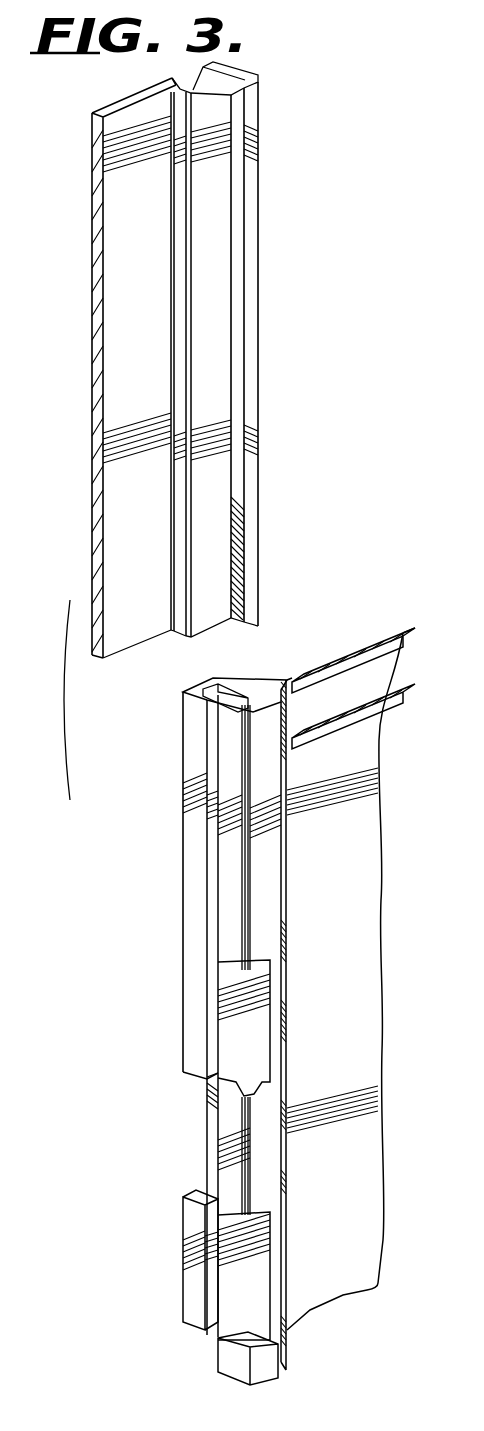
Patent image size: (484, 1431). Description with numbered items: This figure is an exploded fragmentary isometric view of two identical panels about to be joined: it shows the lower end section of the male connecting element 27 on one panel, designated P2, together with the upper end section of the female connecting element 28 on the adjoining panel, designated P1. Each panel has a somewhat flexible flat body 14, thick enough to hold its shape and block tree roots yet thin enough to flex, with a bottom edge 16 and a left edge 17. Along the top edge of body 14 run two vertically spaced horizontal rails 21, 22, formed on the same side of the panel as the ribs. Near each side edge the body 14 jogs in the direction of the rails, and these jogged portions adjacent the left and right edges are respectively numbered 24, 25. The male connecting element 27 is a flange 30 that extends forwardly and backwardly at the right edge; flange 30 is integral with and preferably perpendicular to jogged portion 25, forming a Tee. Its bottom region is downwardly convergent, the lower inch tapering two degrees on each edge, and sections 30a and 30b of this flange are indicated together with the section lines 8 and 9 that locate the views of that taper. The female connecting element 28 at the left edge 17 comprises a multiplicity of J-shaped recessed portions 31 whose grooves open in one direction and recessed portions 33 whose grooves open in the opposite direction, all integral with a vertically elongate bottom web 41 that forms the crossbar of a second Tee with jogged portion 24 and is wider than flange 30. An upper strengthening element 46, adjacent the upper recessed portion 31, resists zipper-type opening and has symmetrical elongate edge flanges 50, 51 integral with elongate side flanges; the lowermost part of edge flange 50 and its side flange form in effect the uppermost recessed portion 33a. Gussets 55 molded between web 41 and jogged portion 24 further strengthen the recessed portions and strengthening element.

The flat body 14 is at (103, 433).
The bottom edge 16 is at (125, 656).
The left edge 17 is at (170, 848).
The horizontal rail 21 is at (395, 640).
The horizontal rail 22 is at (395, 697).
The jogged body portion 24 is at (285, 897).
The jogged body portion 25 is at (215, 244).
The male connecting element 27 is at (258, 172).
The female connecting element 28 is at (183, 995).
The flange 30 is at (256, 349).
The upper section of post member 30a is at (256, 497).
The lower section of post member 30b is at (258, 605).
The recessed portion 31 is at (270, 1153).
The recessed portion 33 is at (183, 1262).
The uppermost recessed portion 33a is at (183, 1047).
The bottom web 41 is at (255, 1040).
The upper strengthening element 46 is at (268, 812).
The edge flange 50 is at (184, 775).
The edge flange 51 is at (222, 903).
The gusset 55 is at (243, 677).
The section line 8 is at (144, 530).
The section line 9 is at (147, 626).
The panel P1 is at (378, 888).
The panel P2 is at (92, 240).